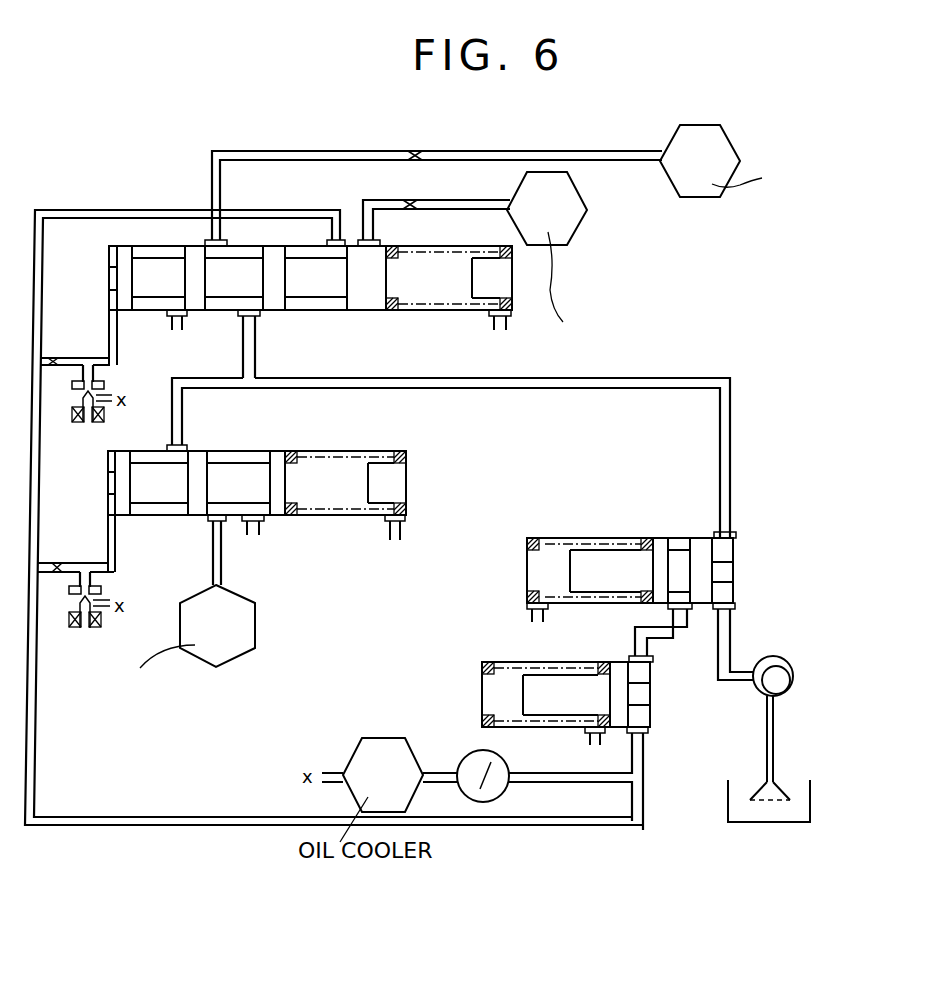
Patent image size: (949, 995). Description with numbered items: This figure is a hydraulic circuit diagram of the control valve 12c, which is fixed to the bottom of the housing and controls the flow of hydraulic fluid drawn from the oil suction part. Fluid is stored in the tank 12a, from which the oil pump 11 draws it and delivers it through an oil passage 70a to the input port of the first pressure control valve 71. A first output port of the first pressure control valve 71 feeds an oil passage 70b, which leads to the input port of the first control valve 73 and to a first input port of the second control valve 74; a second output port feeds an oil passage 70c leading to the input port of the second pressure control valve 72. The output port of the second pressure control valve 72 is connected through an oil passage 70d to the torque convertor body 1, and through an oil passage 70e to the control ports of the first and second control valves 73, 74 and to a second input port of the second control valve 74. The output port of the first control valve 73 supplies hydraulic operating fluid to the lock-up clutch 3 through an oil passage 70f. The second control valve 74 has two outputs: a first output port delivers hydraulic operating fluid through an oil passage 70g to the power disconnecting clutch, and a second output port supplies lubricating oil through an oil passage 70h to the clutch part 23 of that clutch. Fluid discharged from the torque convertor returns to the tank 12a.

The torque convertor body 1 is at (467, 753).
The lock-up clutch 3 is at (257, 608).
The oil pump 11 is at (793, 682).
The tank 12a is at (812, 789).
The control valve 12c is at (667, 311).
The clutch part 23 is at (743, 135).
The oil passage 70a is at (733, 614).
The oil passage 70b is at (730, 400).
The oil passage 70c is at (636, 633).
The oil passage 70d is at (547, 772).
The oil passage 70e is at (189, 816).
The oil passage 70f is at (212, 560).
The oil passage 70g is at (270, 151).
The oil passage 70h is at (363, 203).
The first pressure control valve 71 is at (580, 537).
The second pressure control valve 72 is at (510, 661).
The first control valve 73 is at (255, 450).
The second control valve 74 is at (323, 313).